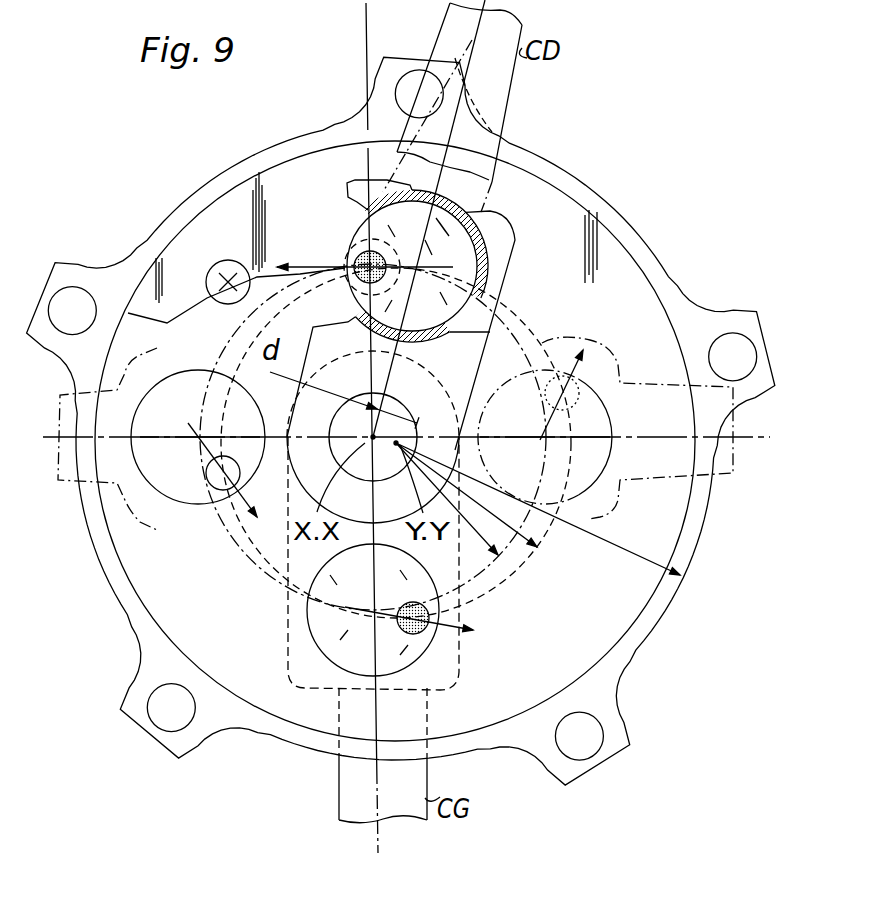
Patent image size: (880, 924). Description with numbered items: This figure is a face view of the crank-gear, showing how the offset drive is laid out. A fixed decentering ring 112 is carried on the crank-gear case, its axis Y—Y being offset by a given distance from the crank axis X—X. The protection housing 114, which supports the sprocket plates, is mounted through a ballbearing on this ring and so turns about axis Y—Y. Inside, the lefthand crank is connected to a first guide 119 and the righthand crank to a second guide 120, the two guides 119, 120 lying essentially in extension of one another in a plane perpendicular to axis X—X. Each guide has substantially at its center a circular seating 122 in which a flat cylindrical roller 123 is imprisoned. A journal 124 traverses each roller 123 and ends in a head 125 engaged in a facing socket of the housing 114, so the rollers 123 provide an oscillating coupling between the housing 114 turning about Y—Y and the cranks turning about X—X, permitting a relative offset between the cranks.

The protection housing 114 is at (590, 190).
The second guide 120 is at (497, 257).
The flat cylindrical roller 123 is at (442, 228).
The journal 124 is at (354, 245).
The head 125 is at (356, 259).
The fixed decentering ring 112 is at (540, 343).
The circular seating 122 is at (470, 590).
The first guide 119 is at (465, 668).